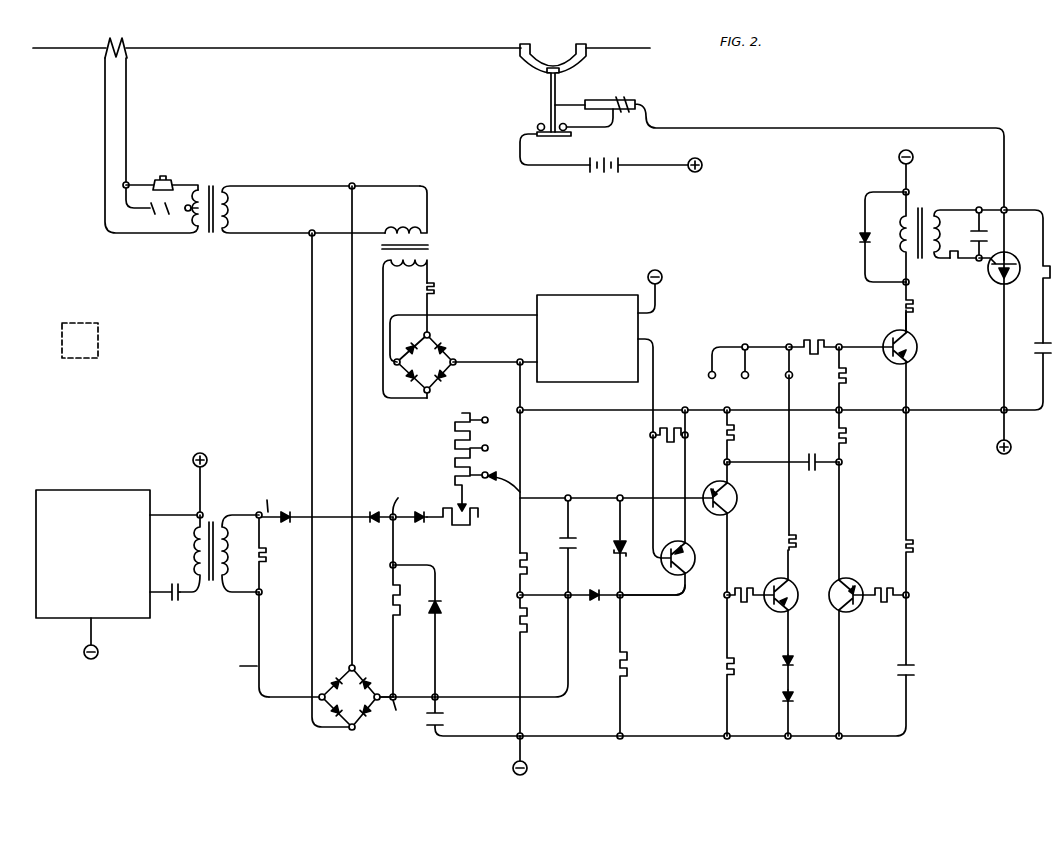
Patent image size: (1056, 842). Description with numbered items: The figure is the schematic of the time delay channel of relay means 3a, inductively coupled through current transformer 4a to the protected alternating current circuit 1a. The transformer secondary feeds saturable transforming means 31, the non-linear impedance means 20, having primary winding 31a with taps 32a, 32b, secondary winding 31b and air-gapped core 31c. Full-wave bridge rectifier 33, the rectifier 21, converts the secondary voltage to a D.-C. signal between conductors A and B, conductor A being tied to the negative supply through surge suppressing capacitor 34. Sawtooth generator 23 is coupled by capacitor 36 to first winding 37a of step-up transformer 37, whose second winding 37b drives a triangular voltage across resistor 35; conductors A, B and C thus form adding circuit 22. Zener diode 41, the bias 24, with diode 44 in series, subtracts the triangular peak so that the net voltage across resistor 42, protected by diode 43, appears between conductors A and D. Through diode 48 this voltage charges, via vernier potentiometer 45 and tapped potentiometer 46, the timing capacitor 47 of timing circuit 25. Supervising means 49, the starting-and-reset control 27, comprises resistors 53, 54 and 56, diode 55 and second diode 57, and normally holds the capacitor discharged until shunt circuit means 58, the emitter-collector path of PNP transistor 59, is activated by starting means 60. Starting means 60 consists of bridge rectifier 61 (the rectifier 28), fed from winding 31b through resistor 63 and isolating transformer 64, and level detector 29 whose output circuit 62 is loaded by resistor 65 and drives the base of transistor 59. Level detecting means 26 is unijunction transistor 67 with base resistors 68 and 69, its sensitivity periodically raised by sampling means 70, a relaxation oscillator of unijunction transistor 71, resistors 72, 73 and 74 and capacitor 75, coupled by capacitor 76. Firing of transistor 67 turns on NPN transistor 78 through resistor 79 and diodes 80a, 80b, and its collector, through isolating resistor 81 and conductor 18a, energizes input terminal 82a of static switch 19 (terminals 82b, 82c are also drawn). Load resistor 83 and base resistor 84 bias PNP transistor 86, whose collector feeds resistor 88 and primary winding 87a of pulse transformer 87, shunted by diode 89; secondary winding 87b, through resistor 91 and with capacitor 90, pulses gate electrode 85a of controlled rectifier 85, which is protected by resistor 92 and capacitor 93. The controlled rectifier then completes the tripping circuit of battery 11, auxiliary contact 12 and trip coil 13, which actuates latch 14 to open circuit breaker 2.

The alternating current circuit 1a is at (310, 48).
The current transformer 4a is at (128, 40).
The circuit breaker 2 is at (759, 148).
The latch 14 is at (573, 104).
The trip coil 13 is at (630, 100).
The auxiliary contact 12 is at (545, 137).
The battery 11 is at (622, 172).
The non-linear impedance means 20 is at (262, 159).
The primary winding tap 32a is at (158, 178).
The primary winding tap 32b is at (152, 213).
The saturable transforming means 31 is at (291, 210).
The primary winding 31a is at (192, 224).
The secondary winding 31b is at (232, 212).
The magnetizable core 31c is at (214, 238).
The rectifier component 28 is at (459, 293).
The isolating transformer 64 is at (452, 254).
The resistor 63 is at (436, 290).
The full-wave bridge rectifier 61 is at (435, 369).
The starting means 60 is at (528, 350).
The level detector 29 is at (587, 323).
The output circuit 62 is at (655, 350).
The static switch 19 is at (936, 302).
The diode 89 is at (858, 238).
The pulse transformer 87 is at (937, 234).
The primary winding 87a is at (900, 250).
The secondary winding 87b is at (945, 215).
The resistor 91 is at (948, 260).
The capacitor 90 is at (971, 236).
The controlled rectifier 85 is at (995, 343).
The gate electrode 85a is at (992, 271).
The resistor 88 is at (900, 305).
The resistor 92 is at (1040, 280).
The capacitor 93 is at (1035, 348).
The PNP transistor 86 is at (917, 356).
The input terminal 82a is at (791, 378).
The switch contact 82b is at (762, 370).
The switch contact 82c is at (706, 379).
The conductor 18a is at (791, 432).
The load resistor 83 is at (813, 340).
The base resistor 84 is at (847, 379).
The resistor 69 is at (735, 436).
The resistor 72 is at (847, 438).
The capacitor 76 is at (812, 472).
The load resistor 65 is at (672, 443).
The level detecting means 26 is at (644, 528).
The unijunction transistor 67 is at (730, 490).
The shunt circuit means 58 is at (689, 533).
The starting-and-reset-control component 27 is at (668, 515).
The PNP transistor 59 is at (690, 572).
The potentiometer 46 is at (455, 445).
The vernier potentiometer 45 is at (452, 526).
The diode 48 is at (416, 525).
The adjustable timing circuit 25 is at (581, 592).
The resistor 53 is at (512, 570).
The third resistor 56 is at (512, 622).
The timing capacitor 47 is at (580, 547).
The second diode 57 is at (626, 545).
The supervising means 49 is at (605, 579).
The diode 55 is at (597, 607).
The resistor 54 is at (630, 667).
The sampling means 70 is at (831, 573).
The resistor 68 is at (735, 670).
The current limiting resistor 79 is at (744, 586).
The NPN transistor 78 is at (797, 588).
The isolating resistor 81 is at (800, 545).
The silicon diode 80a is at (796, 663).
The silicon diode 80b is at (796, 697).
The unijunction transistor 71 is at (852, 582).
The current limiting resistor 73 is at (886, 603).
The resistor 74 is at (914, 548).
The capacitor 75 is at (914, 675).
The bias component 24 is at (413, 607).
The Zener diode 41 is at (372, 510).
The resistor 42 is at (390, 612).
The diode 43 is at (442, 609).
The surge suppressing capacitor 34 is at (445, 718).
The diode 44 is at (286, 510).
The rectifier 21 is at (331, 706).
The full-wave bridge rectifier 33 is at (358, 704).
The adding circuit 22 is at (268, 591).
The resistor 35 is at (270, 555).
The sawtooth generator 23 is at (148, 556).
The step-up transformer 37 is at (212, 544).
The first winding 37a is at (195, 540).
The second winding 37b is at (228, 565).
The capacitor 36 is at (174, 600).
The relay means 3a is at (80, 340).